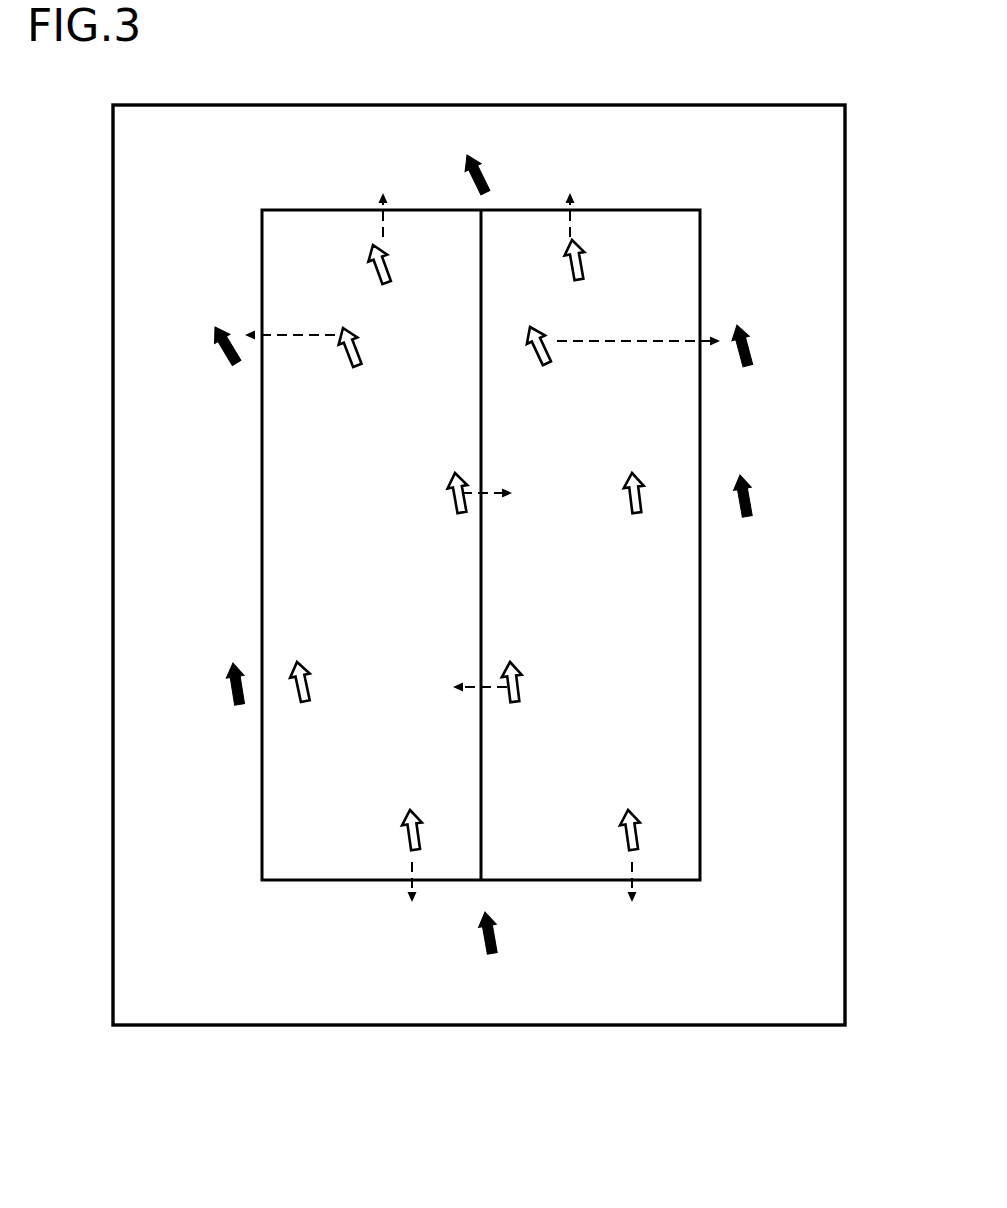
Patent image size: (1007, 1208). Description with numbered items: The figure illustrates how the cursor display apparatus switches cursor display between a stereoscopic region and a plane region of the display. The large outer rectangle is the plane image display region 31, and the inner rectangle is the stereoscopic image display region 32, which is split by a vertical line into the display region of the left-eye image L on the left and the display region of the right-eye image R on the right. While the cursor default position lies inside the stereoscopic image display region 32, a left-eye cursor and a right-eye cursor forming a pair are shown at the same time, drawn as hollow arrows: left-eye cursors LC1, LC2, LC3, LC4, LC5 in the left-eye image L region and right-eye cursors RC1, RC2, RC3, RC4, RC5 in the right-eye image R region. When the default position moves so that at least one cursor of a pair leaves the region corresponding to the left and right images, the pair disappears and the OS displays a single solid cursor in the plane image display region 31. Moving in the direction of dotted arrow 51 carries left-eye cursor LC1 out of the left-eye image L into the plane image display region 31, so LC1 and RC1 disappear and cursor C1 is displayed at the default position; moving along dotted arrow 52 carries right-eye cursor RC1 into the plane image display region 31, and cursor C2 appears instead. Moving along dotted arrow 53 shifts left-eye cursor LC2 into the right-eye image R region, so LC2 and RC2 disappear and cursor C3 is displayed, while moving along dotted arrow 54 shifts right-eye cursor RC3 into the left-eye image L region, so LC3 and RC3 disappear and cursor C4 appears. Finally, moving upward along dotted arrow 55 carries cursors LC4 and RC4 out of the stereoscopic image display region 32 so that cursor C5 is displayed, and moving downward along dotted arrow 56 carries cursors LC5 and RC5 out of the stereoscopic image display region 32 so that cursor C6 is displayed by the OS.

The plane image display region (2D region) 31 is at (818, 123).
The stereoscopic image display region (3D region) 32 is at (262, 499).
The left-eye image L is at (302, 208).
The right-eye image R is at (638, 208).
The left-eye cursor LC1 is at (360, 350).
The left-eye cursor LC2 is at (450, 497).
The left-eye cursor LC3 is at (310, 688).
The left-eye cursor LC4 is at (392, 265).
The left-eye cursor LC5 is at (407, 840).
The right-eye cursor RC1 is at (552, 350).
The right-eye cursor RC2 is at (632, 516).
The right-eye cursor RC3 is at (522, 688).
The right-eye cursor RC4 is at (583, 267).
The right-eye cursor RC5 is at (638, 836).
The cursor C1 is at (218, 348).
The cursor C2 is at (750, 340).
The cursor C3 is at (752, 495).
The cursor C4 is at (230, 692).
The cursor C5 is at (487, 170).
The cursor C6 is at (497, 942).
The dotted arrow 51 is at (298, 338).
The dotted arrow 52 is at (662, 345).
The dotted arrow 53 is at (483, 493).
The dotted arrow 54 is at (466, 684).
The dotted arrow 55 is at (383, 237).
The dotted arrow 56 is at (412, 868).